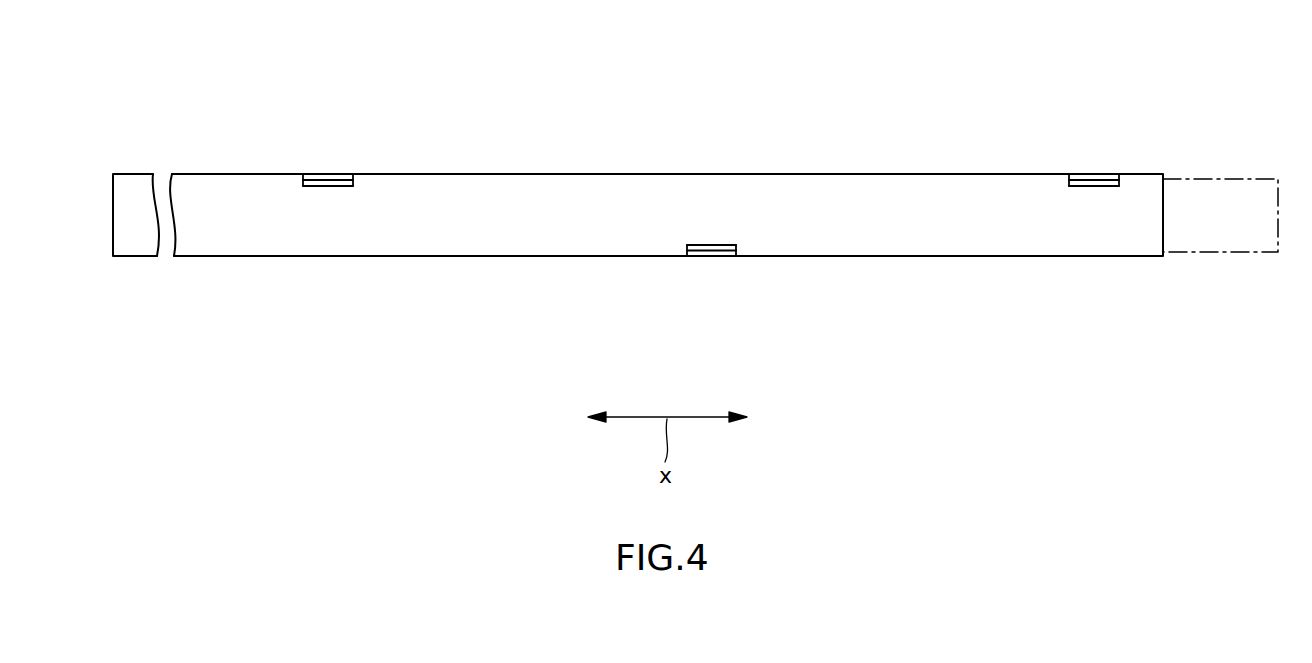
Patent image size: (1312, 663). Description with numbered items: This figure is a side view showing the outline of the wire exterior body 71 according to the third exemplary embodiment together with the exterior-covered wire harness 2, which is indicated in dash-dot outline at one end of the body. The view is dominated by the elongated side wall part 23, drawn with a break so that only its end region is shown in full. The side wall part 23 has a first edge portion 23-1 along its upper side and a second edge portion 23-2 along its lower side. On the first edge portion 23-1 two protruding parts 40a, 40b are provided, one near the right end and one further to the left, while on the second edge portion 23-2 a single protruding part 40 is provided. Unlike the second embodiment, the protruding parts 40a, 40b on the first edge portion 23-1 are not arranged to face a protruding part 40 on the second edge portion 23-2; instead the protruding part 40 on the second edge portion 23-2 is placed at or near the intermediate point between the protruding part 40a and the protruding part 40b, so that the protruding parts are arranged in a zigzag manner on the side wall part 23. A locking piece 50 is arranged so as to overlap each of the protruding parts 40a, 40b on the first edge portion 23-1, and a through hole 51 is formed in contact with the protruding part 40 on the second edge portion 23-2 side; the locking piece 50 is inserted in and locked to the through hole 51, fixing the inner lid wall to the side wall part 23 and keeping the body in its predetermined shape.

The exterior-covered wire harness 2 is at (1270, 180).
The side wall part 23 is at (937, 220).
The first edge portion 23-1 is at (1021, 174).
The second edge portion 23-2 is at (1018, 257).
The protruding part 40 is at (713, 257).
The protruding part 40a is at (1097, 175).
The protruding part 40b is at (332, 175).
The locking piece 50 is at (338, 187).
The through hole 51 is at (720, 245).
The wire exterior body 71 is at (912, 126).